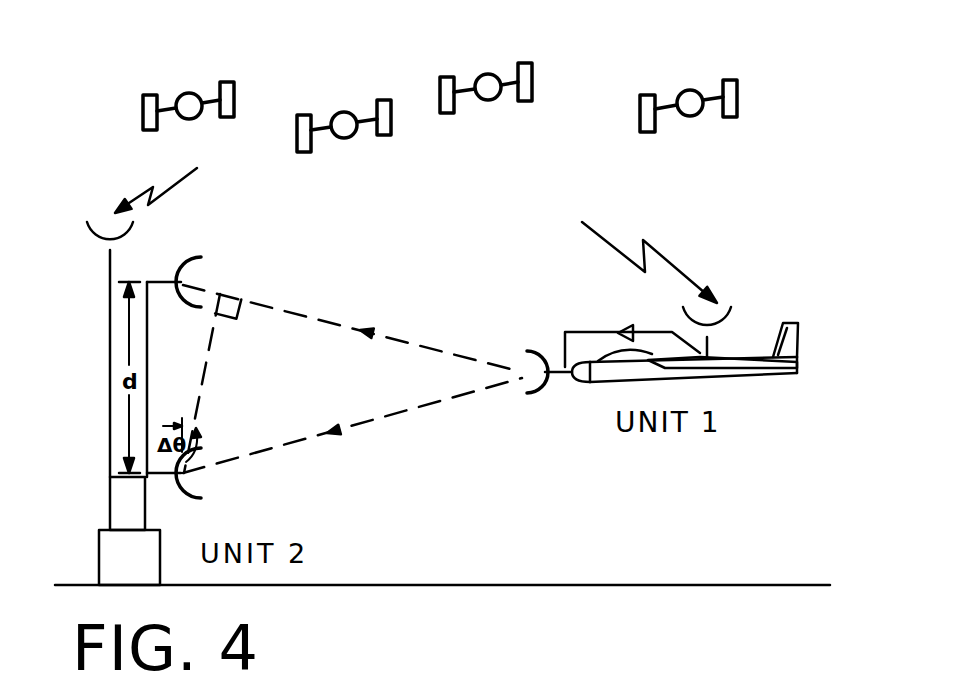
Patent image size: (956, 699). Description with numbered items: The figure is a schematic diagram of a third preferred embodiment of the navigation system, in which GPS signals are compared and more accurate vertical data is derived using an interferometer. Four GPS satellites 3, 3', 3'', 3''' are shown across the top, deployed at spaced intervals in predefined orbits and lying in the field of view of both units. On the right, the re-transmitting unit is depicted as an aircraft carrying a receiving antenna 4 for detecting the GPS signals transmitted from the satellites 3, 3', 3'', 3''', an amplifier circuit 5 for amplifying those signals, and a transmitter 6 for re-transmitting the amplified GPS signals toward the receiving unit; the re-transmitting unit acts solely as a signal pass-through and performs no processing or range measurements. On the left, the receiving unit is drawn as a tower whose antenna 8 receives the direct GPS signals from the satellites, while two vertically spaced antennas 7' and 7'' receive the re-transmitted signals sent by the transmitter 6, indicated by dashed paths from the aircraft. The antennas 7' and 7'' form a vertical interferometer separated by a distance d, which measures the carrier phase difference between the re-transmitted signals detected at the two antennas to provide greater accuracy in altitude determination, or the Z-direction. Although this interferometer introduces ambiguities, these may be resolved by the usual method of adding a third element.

The satellite 3 is at (188, 84).
The satellite 3' is at (344, 100).
The satellite 3'' is at (486, 60).
The satellite 3''' is at (688, 84).
The receiving antenna 4 is at (733, 318).
The amplifier circuit 5 is at (622, 325).
The transmitter 6 is at (540, 393).
The antenna 7' is at (219, 260).
The antenna 7'' is at (226, 487).
The antenna 8 is at (96, 248).